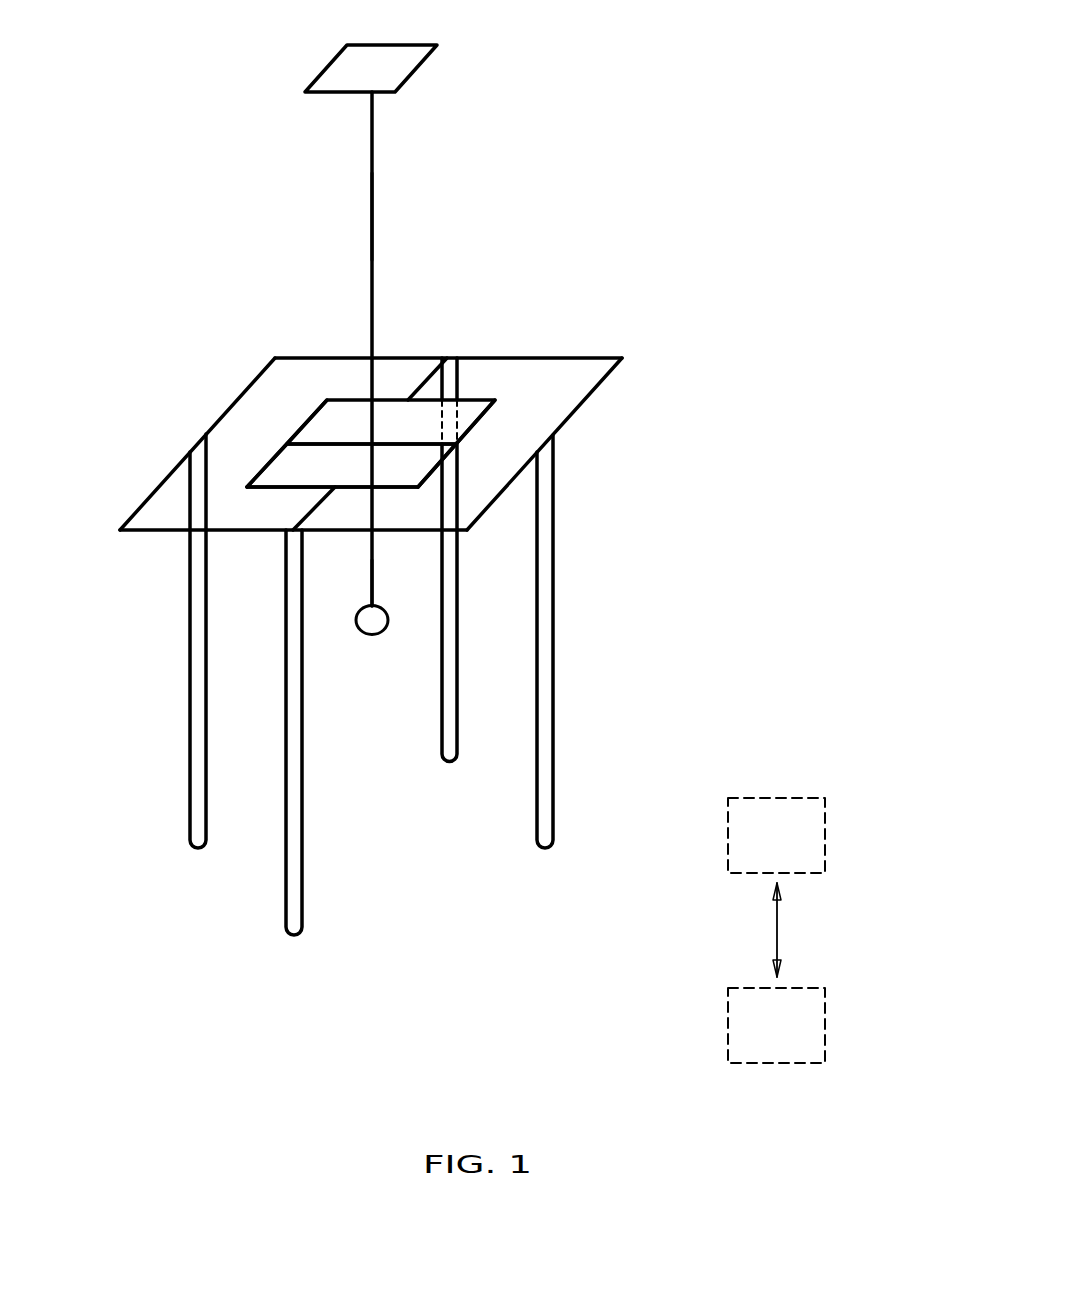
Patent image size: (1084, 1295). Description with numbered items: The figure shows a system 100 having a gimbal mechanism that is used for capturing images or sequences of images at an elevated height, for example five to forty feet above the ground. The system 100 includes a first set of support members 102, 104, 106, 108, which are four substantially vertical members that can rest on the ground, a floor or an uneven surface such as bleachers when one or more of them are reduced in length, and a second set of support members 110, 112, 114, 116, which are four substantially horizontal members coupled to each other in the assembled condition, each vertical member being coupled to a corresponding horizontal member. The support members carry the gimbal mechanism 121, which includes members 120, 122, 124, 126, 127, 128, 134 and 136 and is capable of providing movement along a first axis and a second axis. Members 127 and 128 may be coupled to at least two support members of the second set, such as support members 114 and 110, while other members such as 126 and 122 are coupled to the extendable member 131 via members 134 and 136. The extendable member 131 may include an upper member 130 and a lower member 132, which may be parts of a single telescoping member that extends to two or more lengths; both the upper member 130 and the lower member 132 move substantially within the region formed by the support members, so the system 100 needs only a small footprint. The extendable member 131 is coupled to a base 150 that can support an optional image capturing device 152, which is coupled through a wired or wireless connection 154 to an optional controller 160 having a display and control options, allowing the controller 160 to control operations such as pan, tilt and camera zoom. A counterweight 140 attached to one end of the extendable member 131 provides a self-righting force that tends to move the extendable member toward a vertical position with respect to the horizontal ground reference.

The system 100 is at (642, 90).
The support member 102 is at (553, 538).
The support member 104 is at (287, 638).
The support member 106 is at (195, 708).
The support member 108 is at (453, 555).
The support member 110 is at (508, 357).
The support member 112 is at (591, 395).
The support member 114 is at (162, 531).
The support member 116 is at (232, 402).
The gimbal member 120 is at (466, 400).
The gimbal mechanism 121 is at (513, 393).
The gimbal member 122 is at (473, 423).
The gimbal member 124 is at (273, 487).
The gimbal member 126 is at (263, 463).
The gimbal member 127 is at (316, 508).
The gimbal member 128 is at (421, 386).
The upper member 130 is at (372, 173).
The extendable member 131 is at (405, 240).
The lower member 132 is at (374, 584).
The gimbal member 134 is at (408, 444).
The gimbal member 136 is at (307, 438).
The counterweight 140 is at (357, 617).
The base 150 is at (327, 67).
The image capturing device 152 is at (797, 851).
The wired or wireless connection 154 is at (777, 932).
The controller 160 is at (797, 1041).